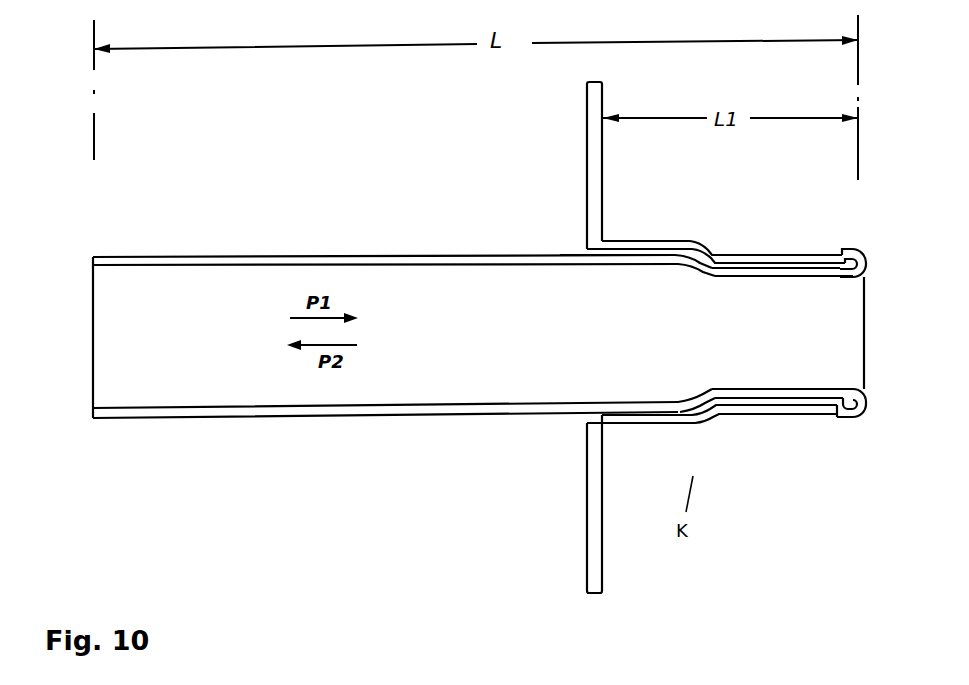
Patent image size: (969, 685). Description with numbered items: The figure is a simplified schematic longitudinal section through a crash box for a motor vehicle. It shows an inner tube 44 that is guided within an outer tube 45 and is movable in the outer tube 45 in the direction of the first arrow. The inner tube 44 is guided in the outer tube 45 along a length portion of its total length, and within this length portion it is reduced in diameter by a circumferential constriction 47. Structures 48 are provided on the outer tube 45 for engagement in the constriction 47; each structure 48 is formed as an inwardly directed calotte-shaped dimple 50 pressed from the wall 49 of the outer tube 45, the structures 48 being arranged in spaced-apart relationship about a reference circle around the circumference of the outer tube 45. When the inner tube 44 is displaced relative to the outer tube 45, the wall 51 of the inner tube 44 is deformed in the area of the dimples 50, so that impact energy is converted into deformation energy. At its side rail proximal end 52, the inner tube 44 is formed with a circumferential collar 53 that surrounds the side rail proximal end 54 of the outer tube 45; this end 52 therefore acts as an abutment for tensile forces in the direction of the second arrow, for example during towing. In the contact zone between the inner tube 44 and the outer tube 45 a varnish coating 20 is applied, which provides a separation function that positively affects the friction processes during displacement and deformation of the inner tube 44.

The varnish coating 20 is at (779, 268).
The inner tube 44 is at (406, 253).
The outer tube 45 is at (729, 472).
The circumferential constriction 47 is at (688, 279).
The structures 48 is at (724, 233).
The wall of the outer tube 49 is at (670, 241).
The calotte-shaped dimple 50 is at (718, 408).
The wall of the inner tube 51 is at (624, 262).
The side rail proximal end of the inner tube 52 is at (876, 377).
The circumferential collar 53 is at (862, 414).
The side rail proximal end of the outer tube 54 is at (848, 420).